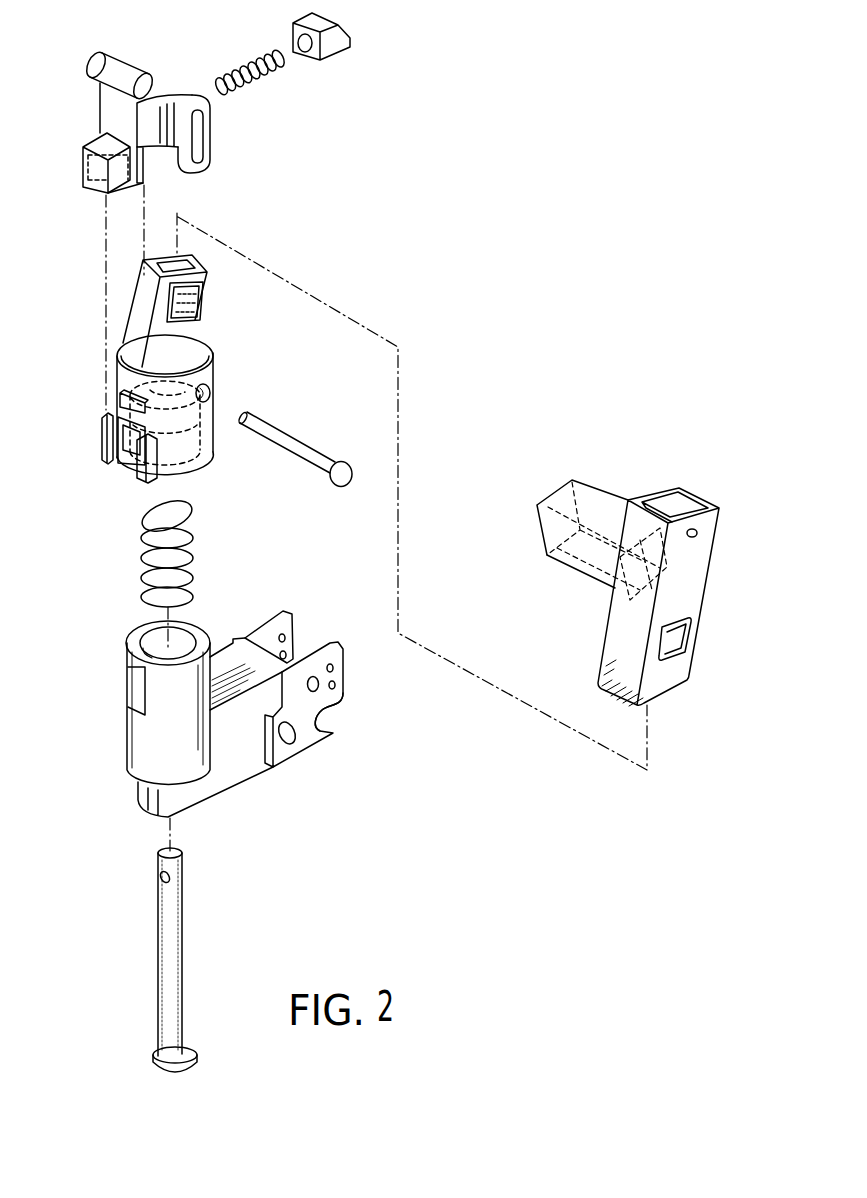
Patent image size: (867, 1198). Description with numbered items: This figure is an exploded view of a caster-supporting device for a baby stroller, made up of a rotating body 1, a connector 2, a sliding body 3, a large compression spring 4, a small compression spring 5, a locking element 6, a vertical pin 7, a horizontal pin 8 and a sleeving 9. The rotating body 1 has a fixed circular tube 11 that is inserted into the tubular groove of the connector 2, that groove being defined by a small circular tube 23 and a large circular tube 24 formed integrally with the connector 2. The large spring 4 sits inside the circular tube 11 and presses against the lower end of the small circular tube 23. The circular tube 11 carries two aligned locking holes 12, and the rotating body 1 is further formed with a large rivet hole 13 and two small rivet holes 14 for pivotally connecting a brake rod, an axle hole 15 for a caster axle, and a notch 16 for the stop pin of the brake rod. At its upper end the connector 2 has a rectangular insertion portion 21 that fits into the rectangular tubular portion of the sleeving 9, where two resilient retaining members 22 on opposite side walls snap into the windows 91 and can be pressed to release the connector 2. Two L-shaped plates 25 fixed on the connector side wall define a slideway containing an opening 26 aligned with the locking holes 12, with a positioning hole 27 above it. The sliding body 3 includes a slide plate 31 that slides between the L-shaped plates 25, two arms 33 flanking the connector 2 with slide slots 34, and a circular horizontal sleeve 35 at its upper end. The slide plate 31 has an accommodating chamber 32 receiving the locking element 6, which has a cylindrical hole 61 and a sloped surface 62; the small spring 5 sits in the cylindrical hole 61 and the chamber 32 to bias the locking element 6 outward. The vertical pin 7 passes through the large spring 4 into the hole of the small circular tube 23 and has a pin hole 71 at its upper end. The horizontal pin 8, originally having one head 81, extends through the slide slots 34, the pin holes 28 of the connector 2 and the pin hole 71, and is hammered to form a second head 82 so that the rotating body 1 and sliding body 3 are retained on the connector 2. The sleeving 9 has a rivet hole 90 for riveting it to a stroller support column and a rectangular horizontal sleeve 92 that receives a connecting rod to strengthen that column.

The rotating body 1 is at (230, 714).
The fixed circular tube 11 is at (152, 768).
The locking holes 12 is at (133, 683).
The large rivet hole 13 is at (318, 691).
The small rivet holes 14 is at (338, 653).
The axle hole 15 is at (289, 744).
The notch 16 is at (336, 733).
The connector 2 is at (159, 381).
The rectangular insertion portion 21 is at (190, 337).
The resilient retaining members 22 is at (207, 305).
The small circular tube 23 is at (187, 463).
The large circular tube 24 is at (215, 447).
The L-shaped plates 25 is at (101, 427).
The opening 26 is at (125, 460).
The positioning hole 27 is at (120, 400).
The pin holes 28 is at (211, 389).
The sliding body 3 is at (147, 125).
The slide plate 31 is at (150, 175).
The accommodating chamber 32 is at (87, 190).
The arms 33 is at (192, 116).
The slide slots 34 is at (208, 165).
The circular horizontal sleeve 35 is at (97, 56).
The large compression spring 4 is at (192, 562).
The small compression spring 5 is at (265, 91).
The locking element 6 is at (336, 54).
The cylindrical hole 61 is at (306, 54).
The sloped surface 62 is at (332, 25).
The vertical pin 7 is at (167, 960).
The pin hole 71 is at (158, 877).
The horizontal pin 8 is at (308, 434).
The head 81 is at (346, 463).
The second head 82 is at (248, 411).
The sleeving 9 is at (635, 581).
The rivet hole 90 is at (673, 493).
The windows 91 is at (675, 643).
The rectangular horizontal sleeve 92 is at (572, 480).